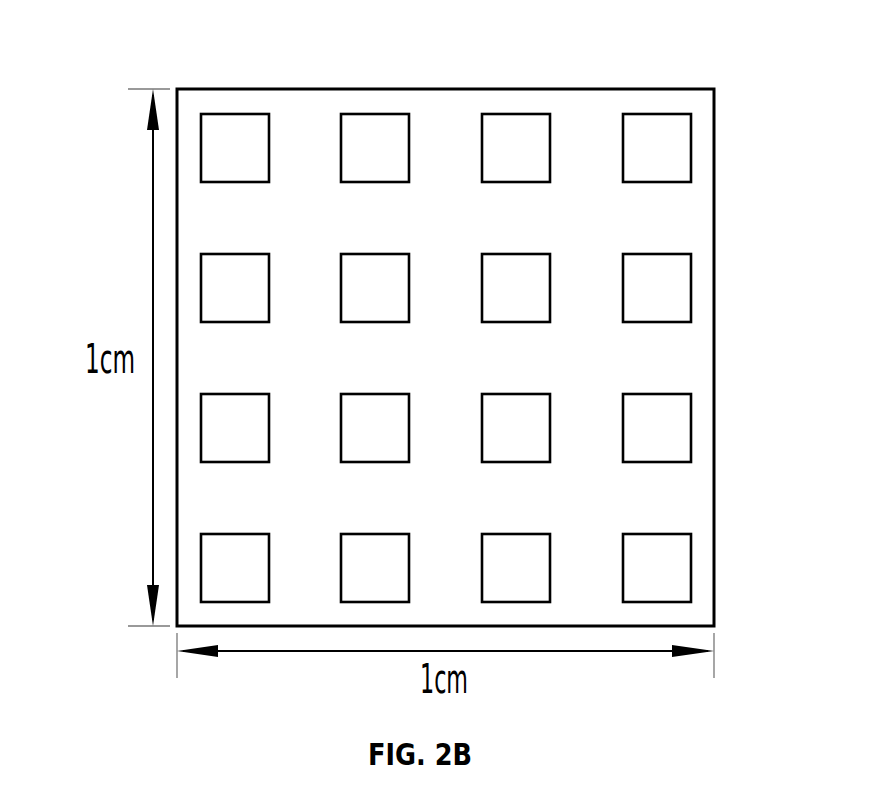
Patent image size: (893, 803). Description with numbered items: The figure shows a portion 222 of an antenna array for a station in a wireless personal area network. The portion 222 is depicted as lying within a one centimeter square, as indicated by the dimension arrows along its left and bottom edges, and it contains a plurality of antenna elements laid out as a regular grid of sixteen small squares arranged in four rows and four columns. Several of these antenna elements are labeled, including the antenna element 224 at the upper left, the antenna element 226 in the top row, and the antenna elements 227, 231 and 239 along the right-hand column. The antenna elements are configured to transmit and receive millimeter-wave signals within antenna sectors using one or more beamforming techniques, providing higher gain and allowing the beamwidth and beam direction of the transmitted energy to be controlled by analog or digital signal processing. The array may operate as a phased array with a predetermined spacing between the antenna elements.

The portion of an antenna array 222 is at (155, 45).
The antenna element 224 is at (238, 113).
The antenna element 226 is at (516, 114).
The antenna element 227 is at (691, 147).
The antenna element 231 is at (691, 288).
The antenna element 239 is at (691, 568).